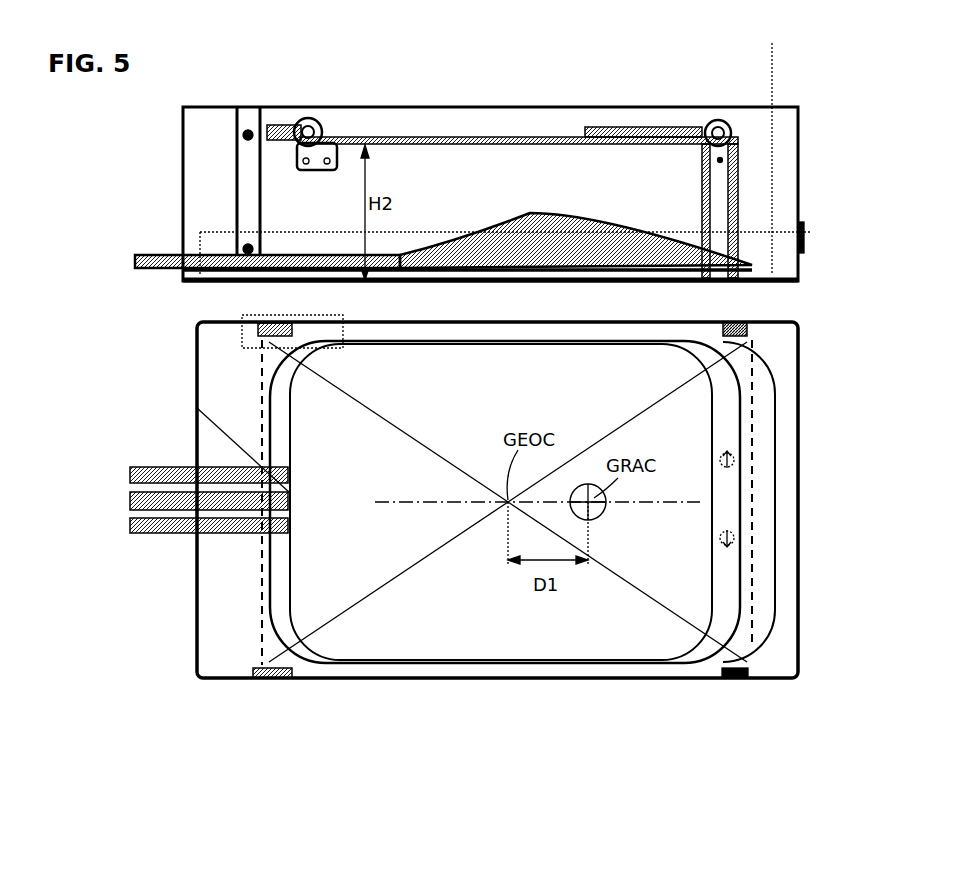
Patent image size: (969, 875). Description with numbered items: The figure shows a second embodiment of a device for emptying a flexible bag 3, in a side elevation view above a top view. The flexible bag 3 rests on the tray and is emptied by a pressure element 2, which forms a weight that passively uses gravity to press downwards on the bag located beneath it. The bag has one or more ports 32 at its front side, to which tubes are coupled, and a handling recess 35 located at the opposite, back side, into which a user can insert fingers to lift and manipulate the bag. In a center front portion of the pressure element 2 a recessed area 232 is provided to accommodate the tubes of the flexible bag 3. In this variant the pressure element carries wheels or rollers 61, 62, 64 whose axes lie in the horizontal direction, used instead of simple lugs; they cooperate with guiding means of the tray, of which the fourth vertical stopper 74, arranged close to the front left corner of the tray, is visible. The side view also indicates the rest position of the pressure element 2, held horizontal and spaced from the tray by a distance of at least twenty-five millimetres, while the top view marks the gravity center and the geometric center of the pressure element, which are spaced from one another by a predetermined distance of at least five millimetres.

The pressure element 2 is at (610, 124).
The flexible bag 3 is at (834, 553).
The ports 32 is at (120, 455).
The handling recess 35 is at (727, 480).
The wheel or roller 61 is at (312, 118).
The wheel or roller 62 is at (722, 118).
The wheel or roller 64 is at (272, 330).
The fourth vertical stopper 74 is at (238, 151).
The recessed area 232 is at (282, 125).